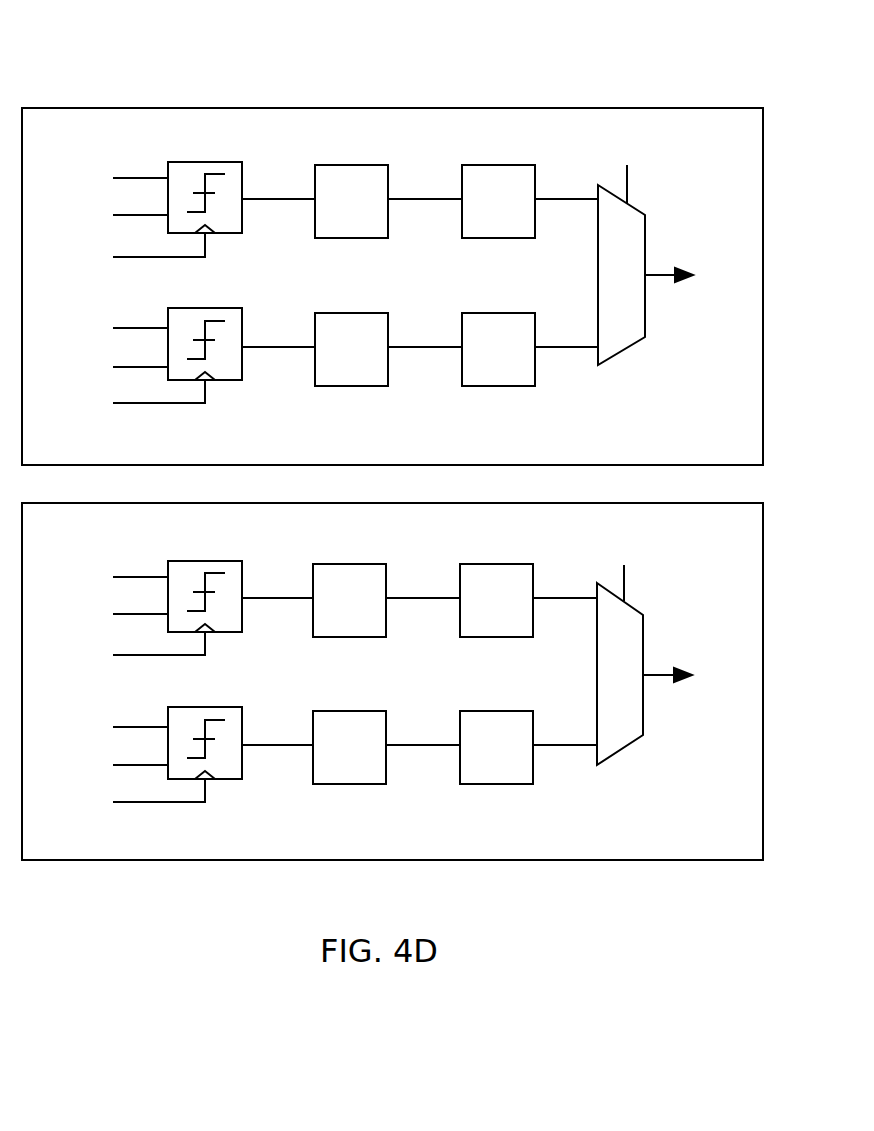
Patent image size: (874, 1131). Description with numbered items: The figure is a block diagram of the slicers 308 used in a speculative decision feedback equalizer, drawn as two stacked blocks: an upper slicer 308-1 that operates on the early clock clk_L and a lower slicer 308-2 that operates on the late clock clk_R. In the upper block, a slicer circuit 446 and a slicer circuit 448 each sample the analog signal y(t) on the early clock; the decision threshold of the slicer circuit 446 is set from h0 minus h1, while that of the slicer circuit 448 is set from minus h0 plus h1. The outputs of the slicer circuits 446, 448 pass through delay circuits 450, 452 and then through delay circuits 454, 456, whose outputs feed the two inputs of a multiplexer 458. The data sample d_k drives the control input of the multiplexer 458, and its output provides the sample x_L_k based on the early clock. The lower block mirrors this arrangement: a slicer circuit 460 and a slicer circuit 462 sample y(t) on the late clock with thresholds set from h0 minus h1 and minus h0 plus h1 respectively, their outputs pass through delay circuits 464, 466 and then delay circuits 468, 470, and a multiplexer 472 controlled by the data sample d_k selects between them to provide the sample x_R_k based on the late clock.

The slicers 308 is at (156, 62).
The slicer 308-1 is at (424, 108).
The slicer 308-2 is at (507, 860).
The slicer circuit 446 is at (187, 161).
The slicer circuit 448 is at (213, 308).
The delay circuit 450 is at (360, 238).
The delay circuit 452 is at (360, 386).
The delay circuit 454 is at (507, 238).
The delay circuit 456 is at (507, 386).
The multiplexer 458 is at (625, 352).
The slicer circuit 460 is at (187, 560).
The slicer circuit 462 is at (213, 707).
The delay circuit 464 is at (358, 637).
The delay circuit 466 is at (358, 784).
The delay circuit 468 is at (505, 637).
The delay circuit 470 is at (505, 784).
The multiplexer 472 is at (622, 752).